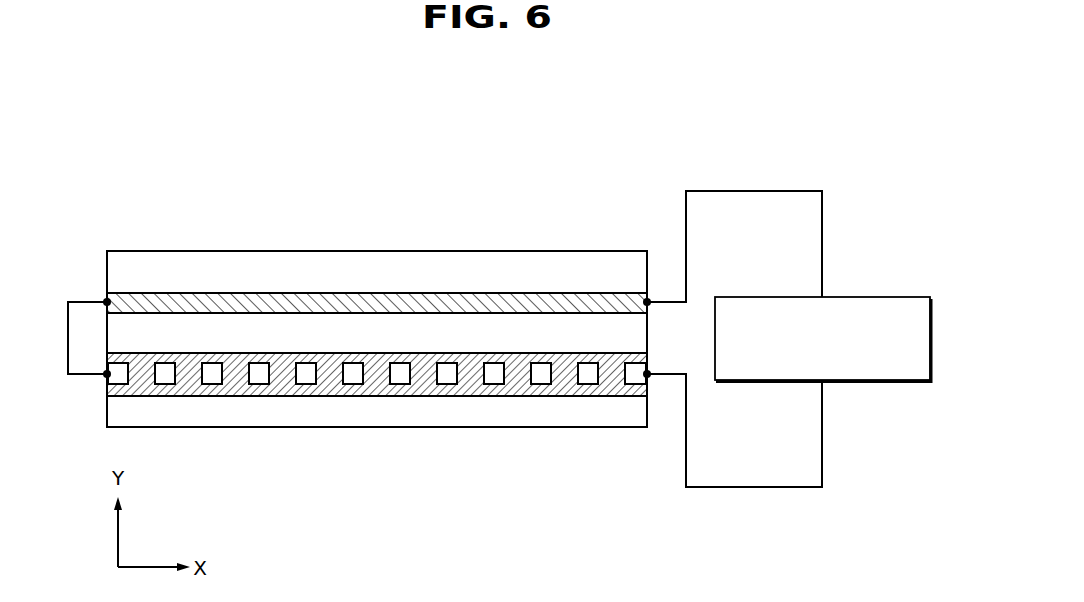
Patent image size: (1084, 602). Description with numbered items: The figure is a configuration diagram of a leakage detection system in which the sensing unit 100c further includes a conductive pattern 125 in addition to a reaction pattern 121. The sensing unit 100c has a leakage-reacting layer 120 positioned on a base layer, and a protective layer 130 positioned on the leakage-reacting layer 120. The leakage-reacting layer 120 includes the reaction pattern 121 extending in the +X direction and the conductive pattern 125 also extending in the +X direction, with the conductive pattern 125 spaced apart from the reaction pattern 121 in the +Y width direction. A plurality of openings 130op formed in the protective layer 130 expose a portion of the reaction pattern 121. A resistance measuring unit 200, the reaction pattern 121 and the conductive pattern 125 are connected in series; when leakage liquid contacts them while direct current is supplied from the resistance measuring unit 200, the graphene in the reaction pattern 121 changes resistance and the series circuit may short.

The sensing unit 100c is at (401, 268).
The leakage-reacting layer 120 is at (377, 271).
The conductive pattern 125 is at (287, 302).
The reaction pattern 121 is at (377, 297).
The protective layer 130 is at (553, 263).
The openings 130op is at (449, 357).
The resistance measuring unit 200 is at (838, 296).